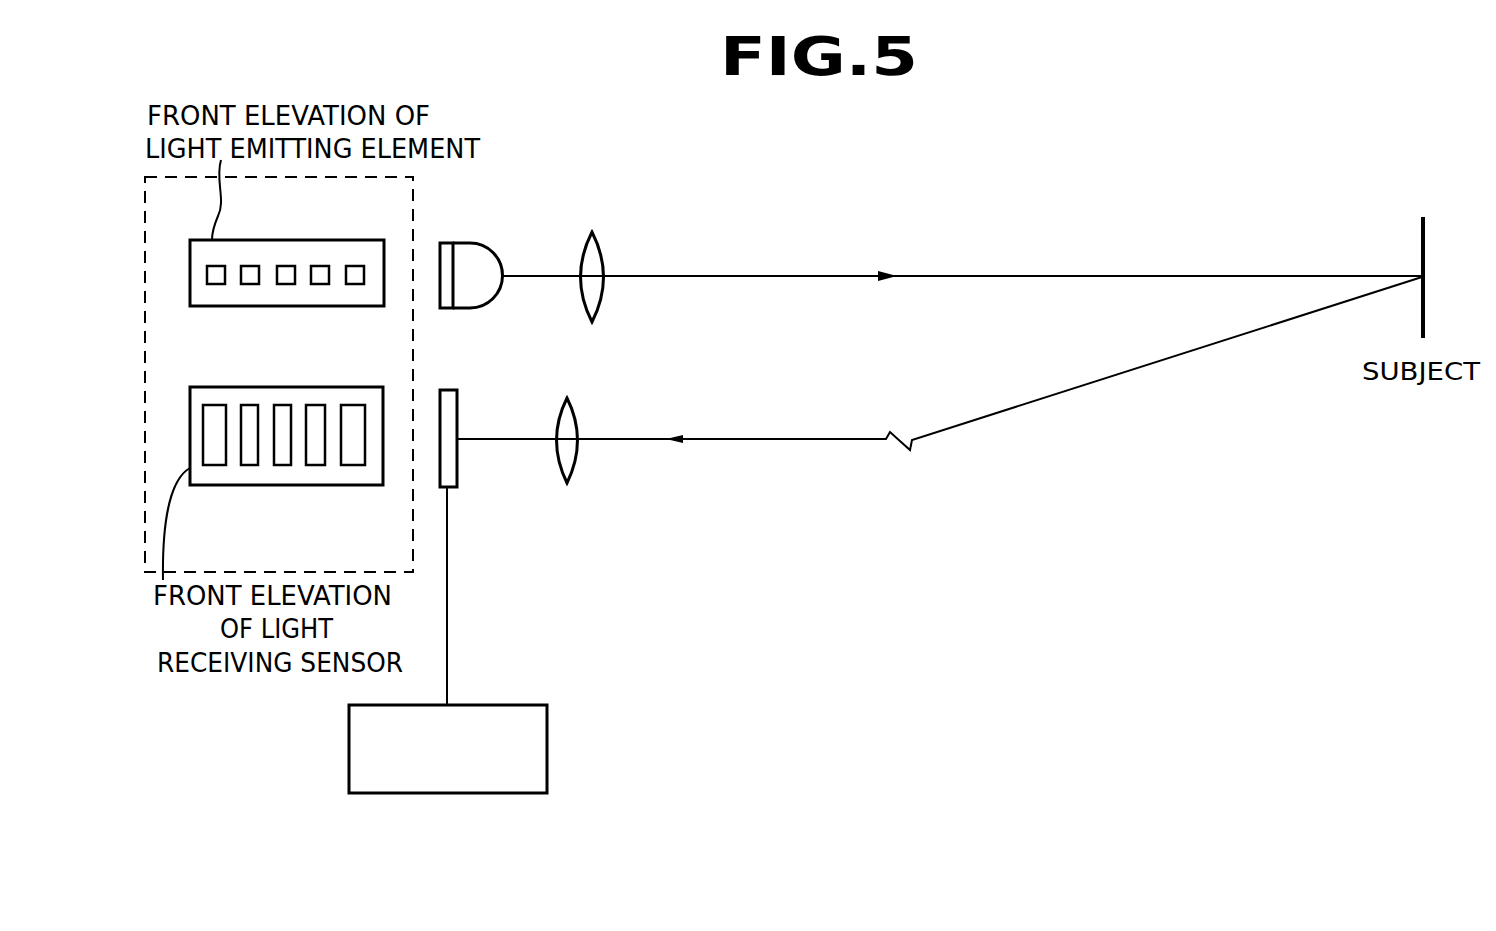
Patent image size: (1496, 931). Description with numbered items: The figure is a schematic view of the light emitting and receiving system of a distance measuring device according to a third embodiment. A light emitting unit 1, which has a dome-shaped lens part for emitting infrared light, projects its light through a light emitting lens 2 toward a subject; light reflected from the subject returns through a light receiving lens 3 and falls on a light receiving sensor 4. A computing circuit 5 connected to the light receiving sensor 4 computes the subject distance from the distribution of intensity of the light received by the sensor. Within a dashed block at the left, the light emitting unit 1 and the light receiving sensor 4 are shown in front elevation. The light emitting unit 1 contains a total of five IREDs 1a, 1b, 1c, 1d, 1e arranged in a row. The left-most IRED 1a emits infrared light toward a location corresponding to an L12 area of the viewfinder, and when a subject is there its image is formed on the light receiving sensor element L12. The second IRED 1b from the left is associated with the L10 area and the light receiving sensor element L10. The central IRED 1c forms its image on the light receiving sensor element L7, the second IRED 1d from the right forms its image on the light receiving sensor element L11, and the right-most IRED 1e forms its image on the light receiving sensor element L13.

The light emitting unit 1 is at (489, 243).
The IRED 1a is at (216, 284).
The IRED 1b is at (250, 284).
The IRED 1c is at (286, 284).
The IRED 1d is at (320, 284).
The IRED 1e is at (355, 284).
The light emitting lens 2 is at (601, 250).
The light receiving lens 3 is at (580, 462).
The light receiving sensor 4 is at (452, 487).
The computing circuit 5 is at (547, 760).
The light receiving sensor element L12 is at (214, 465).
The light receiving sensor element L10 is at (249, 465).
The light receiving sensor element L7 is at (282, 465).
The light receiving sensor element L11 is at (315, 465).
The light receiving sensor element L13 is at (353, 465).